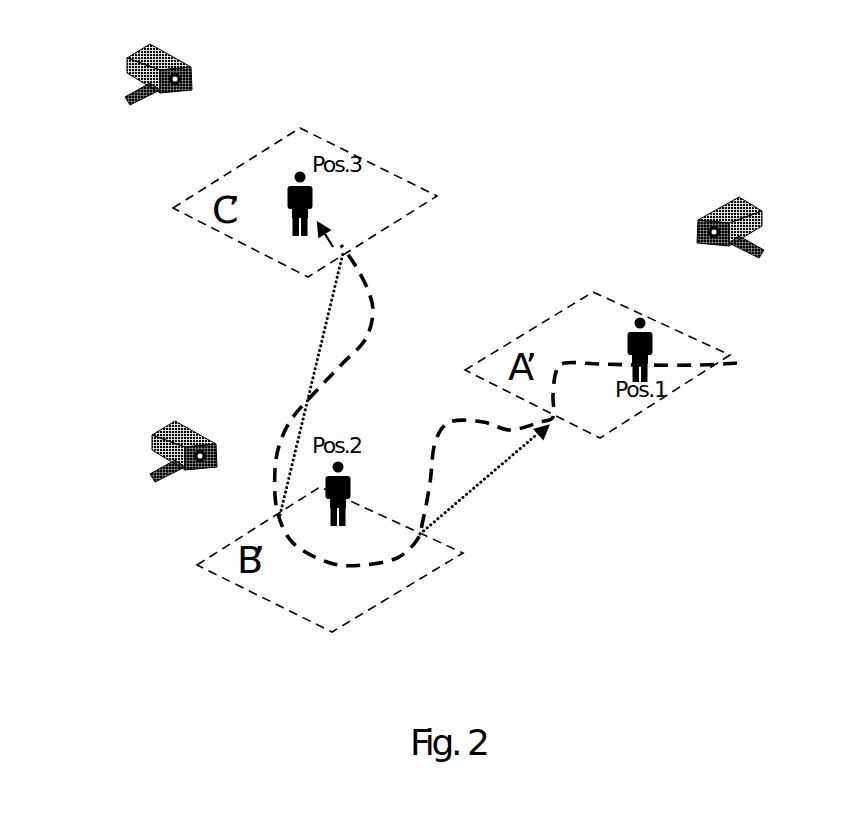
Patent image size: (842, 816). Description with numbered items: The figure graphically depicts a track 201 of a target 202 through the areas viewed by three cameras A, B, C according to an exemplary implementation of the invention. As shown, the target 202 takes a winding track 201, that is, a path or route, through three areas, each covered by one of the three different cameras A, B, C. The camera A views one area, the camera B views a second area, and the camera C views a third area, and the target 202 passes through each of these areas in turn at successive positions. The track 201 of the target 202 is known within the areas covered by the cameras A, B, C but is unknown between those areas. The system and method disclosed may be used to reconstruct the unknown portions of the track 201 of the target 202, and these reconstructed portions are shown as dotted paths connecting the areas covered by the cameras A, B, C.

The track 201 is at (742, 360).
The target 202 is at (280, 170).
The camera A is at (745, 212).
The camera B is at (176, 437).
The camera C is at (144, 65).